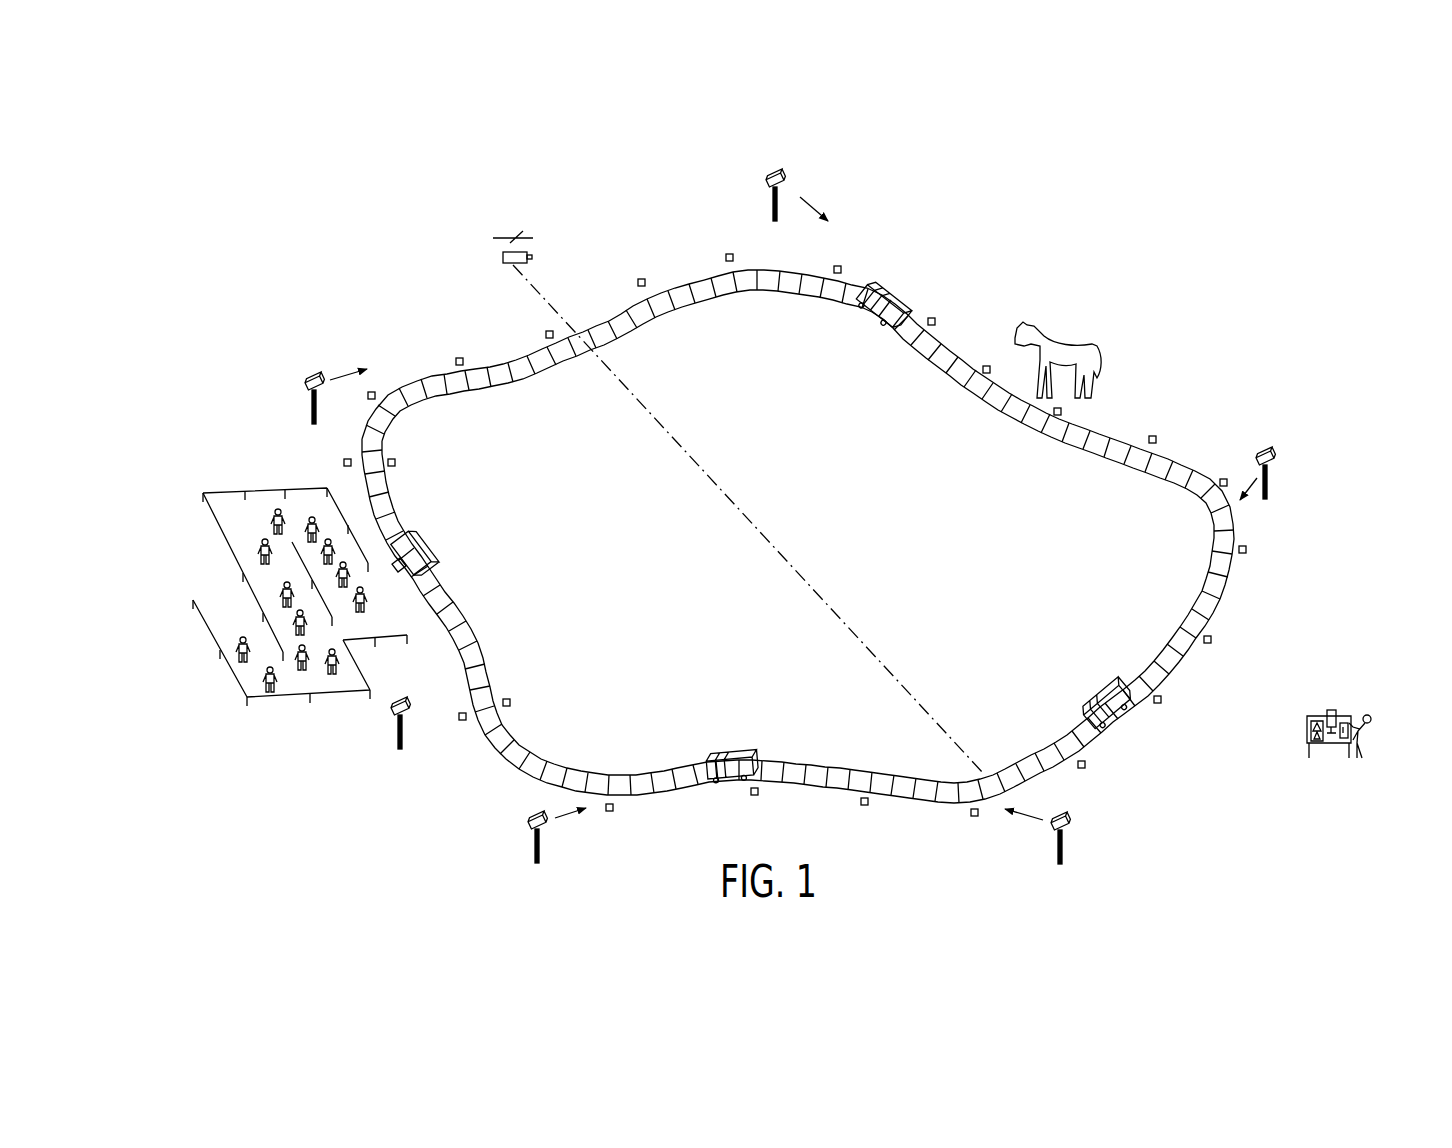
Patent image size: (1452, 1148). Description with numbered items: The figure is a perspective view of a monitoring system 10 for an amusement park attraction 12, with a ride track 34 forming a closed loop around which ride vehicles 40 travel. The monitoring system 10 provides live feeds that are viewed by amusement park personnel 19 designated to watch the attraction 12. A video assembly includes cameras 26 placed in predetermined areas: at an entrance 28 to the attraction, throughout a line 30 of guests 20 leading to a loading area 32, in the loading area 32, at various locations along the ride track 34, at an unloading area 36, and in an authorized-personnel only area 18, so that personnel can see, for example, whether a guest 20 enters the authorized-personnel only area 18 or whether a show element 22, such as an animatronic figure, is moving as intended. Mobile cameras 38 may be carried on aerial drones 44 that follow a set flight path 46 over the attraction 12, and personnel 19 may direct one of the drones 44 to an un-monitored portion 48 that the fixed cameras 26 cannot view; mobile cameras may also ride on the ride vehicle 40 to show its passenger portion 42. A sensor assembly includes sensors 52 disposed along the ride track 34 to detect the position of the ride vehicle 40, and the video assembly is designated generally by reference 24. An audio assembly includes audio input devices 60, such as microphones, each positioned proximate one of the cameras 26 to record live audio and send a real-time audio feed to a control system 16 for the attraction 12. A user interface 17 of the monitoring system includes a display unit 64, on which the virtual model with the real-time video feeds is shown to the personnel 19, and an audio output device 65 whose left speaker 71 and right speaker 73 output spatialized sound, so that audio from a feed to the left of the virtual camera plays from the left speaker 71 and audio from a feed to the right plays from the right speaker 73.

The monitoring system 10 is at (962, 198).
The amusement park attraction 12 is at (990, 268).
The control system 16 is at (1319, 719).
The user interface 17 is at (1275, 751).
The authorized-personnel only area 18 is at (470, 428).
The amusement park personnel 19 is at (1377, 704).
The guest 20 is at (266, 542).
The show element 22 is at (1062, 340).
The sensor system 24 is at (786, 131).
The cameras 26 is at (312, 378).
The entrance 28 is at (265, 626).
The line 30 is at (320, 700).
The loading area 32 is at (405, 605).
The ride track 34 is at (653, 798).
The unloading area 36 is at (348, 490).
The mobile cameras 38 is at (532, 257).
The ride vehicle 40 is at (450, 525).
The passenger portion 42 is at (428, 556).
The aerial drones 44 is at (518, 254).
The set flight path 46 is at (560, 307).
The un-monitored portion 48 is at (760, 563).
The sensors 52 is at (1214, 634).
The audio input devices 60 is at (322, 398).
The display unit 64 is at (1331, 712).
The audio output device 65 is at (1273, 722).
The left speaker 71 is at (1315, 734).
The right speaker 73 is at (1315, 718).